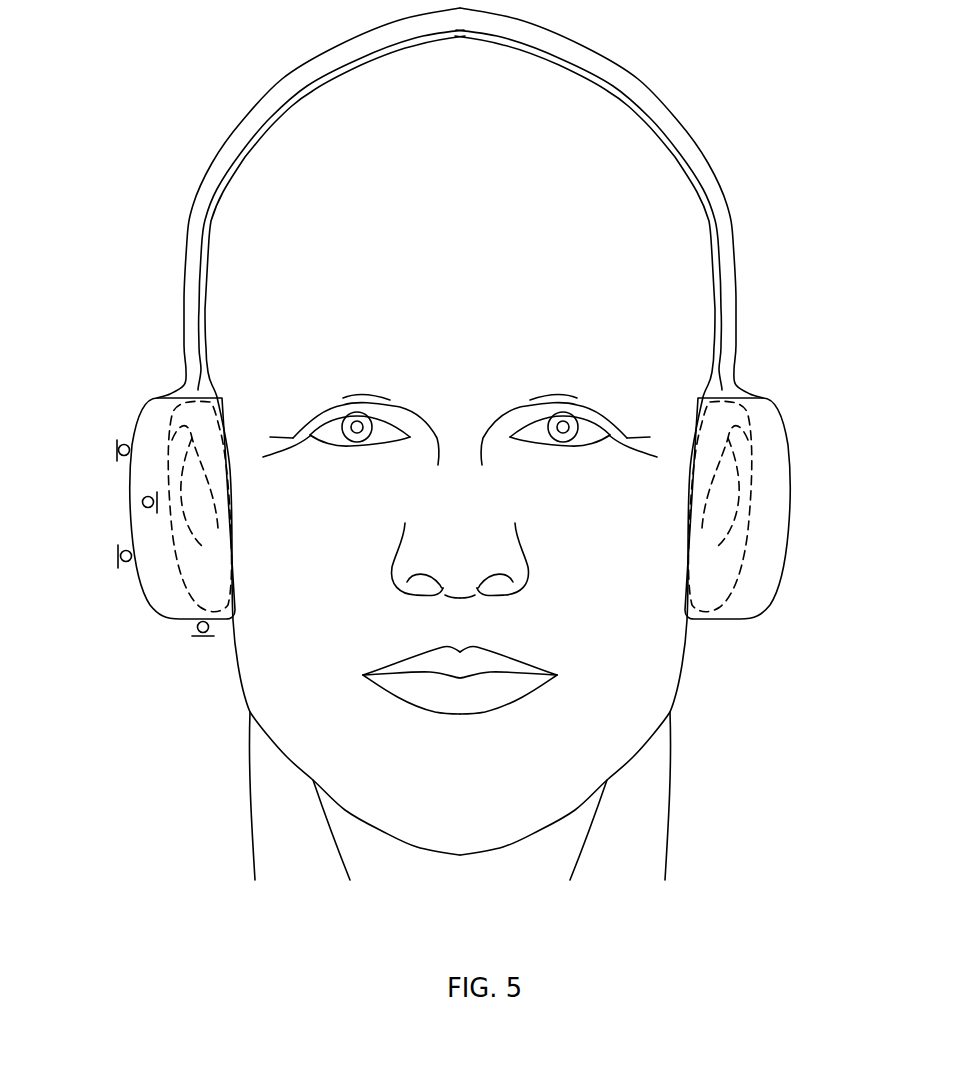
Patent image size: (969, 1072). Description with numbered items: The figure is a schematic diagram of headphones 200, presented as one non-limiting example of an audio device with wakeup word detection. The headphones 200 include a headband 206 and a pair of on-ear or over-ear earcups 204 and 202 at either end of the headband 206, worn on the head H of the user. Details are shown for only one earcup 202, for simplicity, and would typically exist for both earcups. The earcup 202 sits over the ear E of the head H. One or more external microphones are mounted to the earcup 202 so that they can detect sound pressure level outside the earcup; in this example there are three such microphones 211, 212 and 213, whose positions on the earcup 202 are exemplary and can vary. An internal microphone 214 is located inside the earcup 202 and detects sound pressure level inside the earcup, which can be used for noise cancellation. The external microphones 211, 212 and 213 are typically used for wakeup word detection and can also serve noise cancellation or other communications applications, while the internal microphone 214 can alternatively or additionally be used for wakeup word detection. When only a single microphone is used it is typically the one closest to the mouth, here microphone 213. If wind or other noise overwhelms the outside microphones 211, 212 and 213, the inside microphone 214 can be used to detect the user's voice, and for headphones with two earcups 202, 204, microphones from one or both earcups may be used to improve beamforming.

The headphones 200 is at (448, 353).
The earcup 202 is at (126, 524).
The earcup 204 is at (790, 445).
The headband 206 is at (730, 200).
The external microphone 211 is at (104, 453).
The external microphone 212 is at (104, 557).
The external microphone 213 is at (196, 652).
The internal microphone 214 is at (128, 502).
The head H is at (718, 262).
The ear E is at (160, 605).